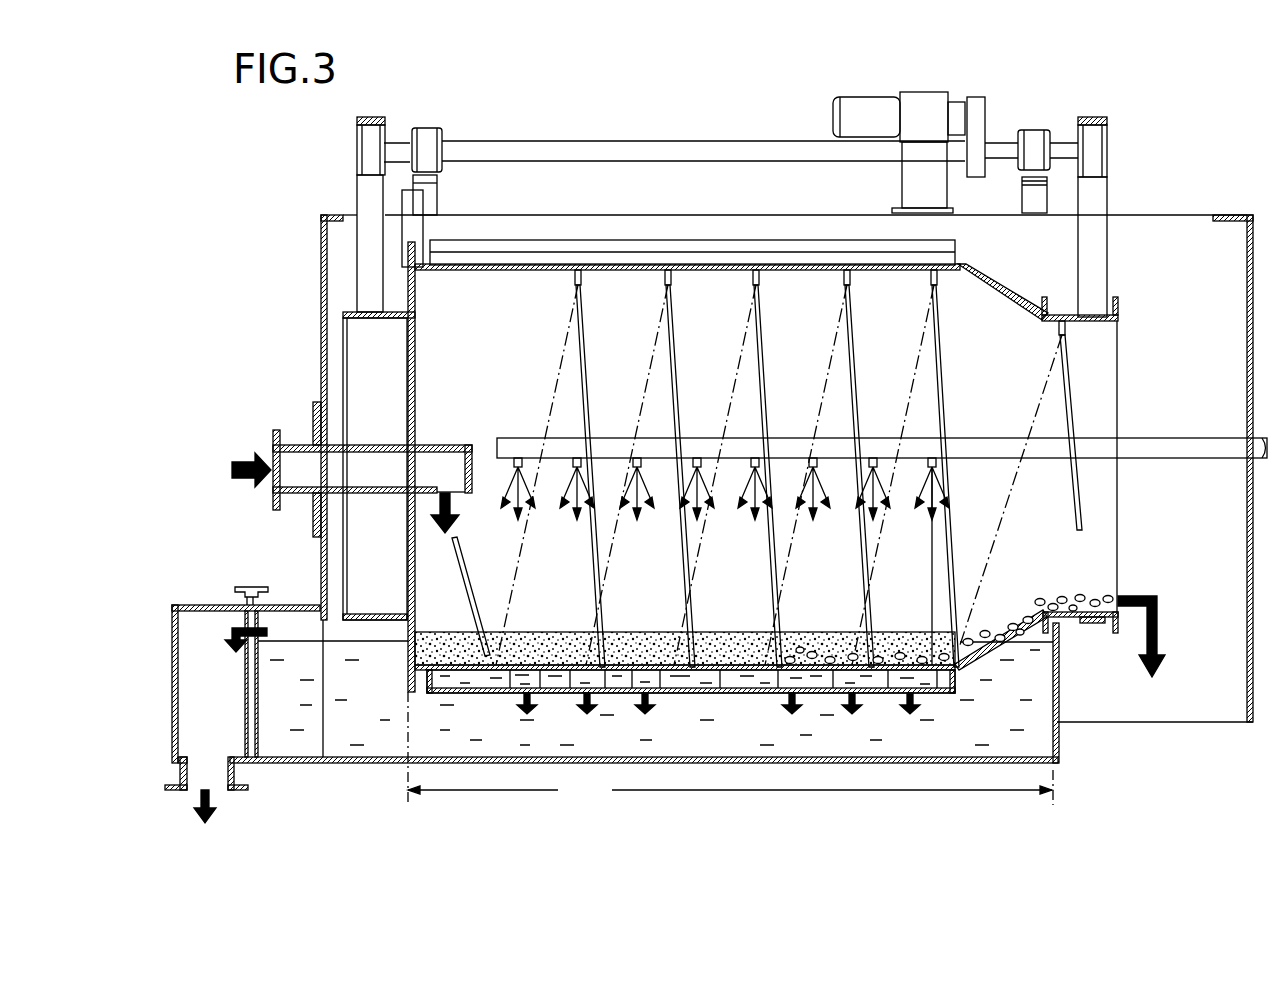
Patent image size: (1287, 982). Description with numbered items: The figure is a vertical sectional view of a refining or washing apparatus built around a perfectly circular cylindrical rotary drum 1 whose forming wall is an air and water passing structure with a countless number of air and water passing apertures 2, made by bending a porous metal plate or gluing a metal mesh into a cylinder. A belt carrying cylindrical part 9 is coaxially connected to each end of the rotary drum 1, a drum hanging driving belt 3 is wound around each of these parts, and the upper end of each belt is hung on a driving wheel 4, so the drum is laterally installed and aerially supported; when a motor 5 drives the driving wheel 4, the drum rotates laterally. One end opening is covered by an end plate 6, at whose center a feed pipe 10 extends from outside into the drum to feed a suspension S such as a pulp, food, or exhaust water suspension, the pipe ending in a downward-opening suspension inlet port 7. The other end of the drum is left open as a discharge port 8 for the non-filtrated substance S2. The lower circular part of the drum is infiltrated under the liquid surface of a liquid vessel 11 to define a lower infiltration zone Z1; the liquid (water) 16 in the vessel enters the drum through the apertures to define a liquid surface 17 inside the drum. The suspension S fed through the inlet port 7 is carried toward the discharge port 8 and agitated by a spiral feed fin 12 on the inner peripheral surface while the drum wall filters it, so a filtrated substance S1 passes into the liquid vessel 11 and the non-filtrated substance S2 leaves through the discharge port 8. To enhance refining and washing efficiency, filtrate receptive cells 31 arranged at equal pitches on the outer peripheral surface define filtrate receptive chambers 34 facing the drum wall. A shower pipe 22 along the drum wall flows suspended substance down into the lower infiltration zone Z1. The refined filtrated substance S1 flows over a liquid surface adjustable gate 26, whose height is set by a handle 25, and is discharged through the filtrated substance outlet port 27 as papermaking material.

The rotary drum 1 is at (630, 264).
The air and water passing apertures 2 is at (497, 270).
The drum hanging driving belt 3 is at (362, 202).
The driving wheel 4 is at (366, 150).
The motor 5 is at (833, 117).
The end plate 6 is at (408, 370).
The suspension inlet port 7 is at (460, 494).
The discharge port 8 is at (1110, 492).
The belt carrying cylindrical part 9 is at (345, 312).
The feed pipe 10 is at (384, 445).
The liquid vessel 11 is at (835, 763).
The feed fin 12 is at (790, 553).
The liquid (water) 16 is at (1000, 732).
The liquid surface 17 is at (1030, 646).
The shower pipe 22 is at (1158, 446).
The handle 25 is at (252, 587).
The liquid surface adjustable gate 26 is at (245, 689).
The filtrated substance outlet port 27 is at (215, 778).
The filtrate receptive cell 31 is at (697, 252).
The filtrate receptive chamber 34 is at (745, 686).
The suspension S is at (244, 468).
The filtrated substance S1 is at (210, 810).
The non-filtrated substance S2 is at (1095, 600).
The lower infiltration zone Z1 is at (730, 748).